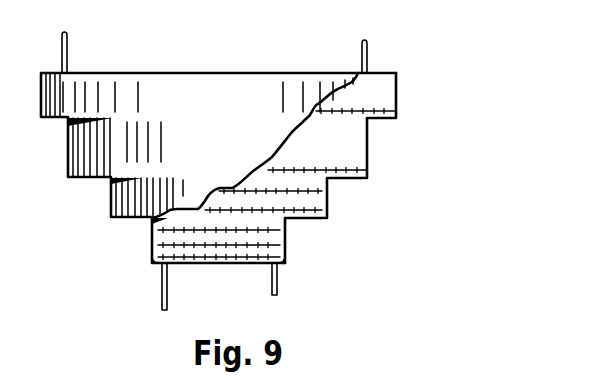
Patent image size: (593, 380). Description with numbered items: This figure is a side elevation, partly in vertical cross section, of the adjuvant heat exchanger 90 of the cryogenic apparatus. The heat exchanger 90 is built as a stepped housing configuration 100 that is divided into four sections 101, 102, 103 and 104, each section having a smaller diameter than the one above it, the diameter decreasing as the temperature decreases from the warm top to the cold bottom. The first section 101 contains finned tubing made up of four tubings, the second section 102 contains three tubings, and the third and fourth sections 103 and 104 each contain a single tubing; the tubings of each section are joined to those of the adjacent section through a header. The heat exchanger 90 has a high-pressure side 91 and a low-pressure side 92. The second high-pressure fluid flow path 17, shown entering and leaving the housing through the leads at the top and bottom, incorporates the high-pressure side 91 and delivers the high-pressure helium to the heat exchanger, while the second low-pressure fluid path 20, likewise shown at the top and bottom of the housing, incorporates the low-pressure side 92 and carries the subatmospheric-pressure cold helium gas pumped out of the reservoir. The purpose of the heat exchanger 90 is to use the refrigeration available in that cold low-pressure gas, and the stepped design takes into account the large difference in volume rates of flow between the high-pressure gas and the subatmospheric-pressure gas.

The second high-pressure fluid flow path 17 is at (67, 47).
The second low-pressure fluid path 20 is at (362, 47).
The heat exchanger 90 is at (370, 160).
The high-pressure side 91 is at (152, 260).
The low-pressure side 92 is at (282, 253).
The stepped housing configuration 100 is at (370, 170).
The first section 101 is at (388, 101).
The second section 102 is at (357, 143).
The third section 103 is at (318, 203).
The fourth section 104 is at (285, 242).